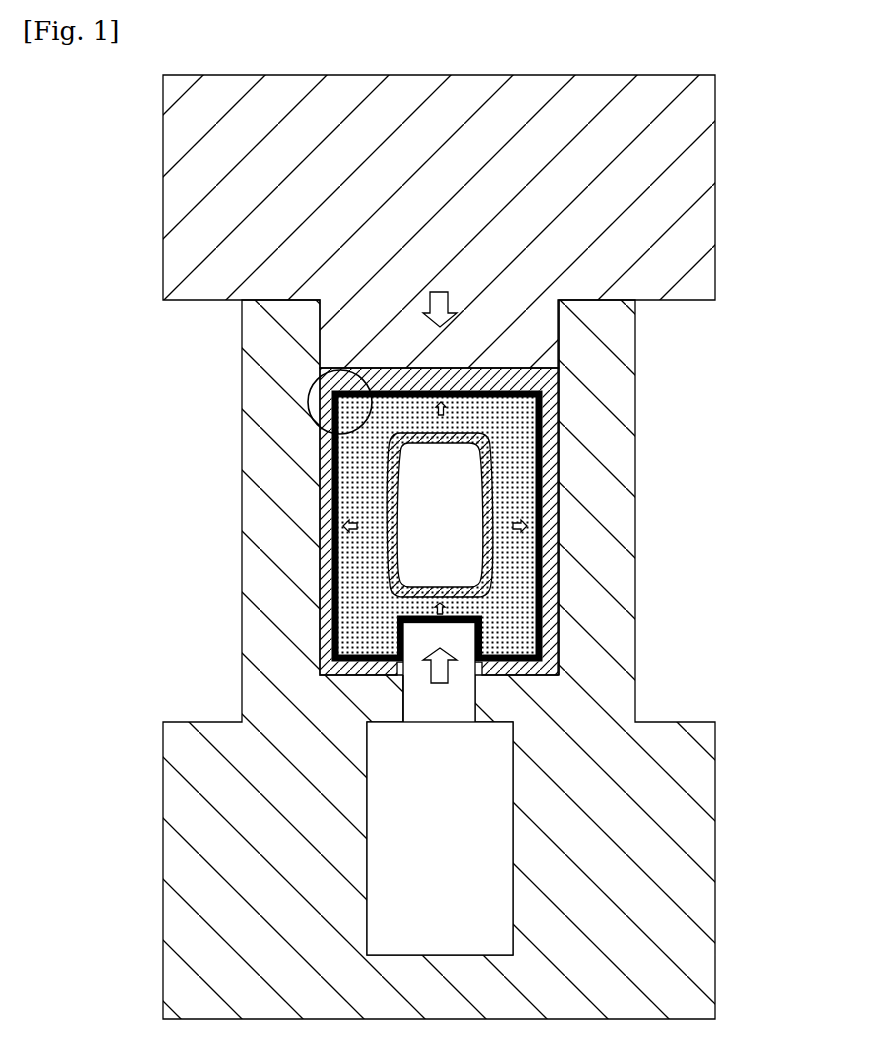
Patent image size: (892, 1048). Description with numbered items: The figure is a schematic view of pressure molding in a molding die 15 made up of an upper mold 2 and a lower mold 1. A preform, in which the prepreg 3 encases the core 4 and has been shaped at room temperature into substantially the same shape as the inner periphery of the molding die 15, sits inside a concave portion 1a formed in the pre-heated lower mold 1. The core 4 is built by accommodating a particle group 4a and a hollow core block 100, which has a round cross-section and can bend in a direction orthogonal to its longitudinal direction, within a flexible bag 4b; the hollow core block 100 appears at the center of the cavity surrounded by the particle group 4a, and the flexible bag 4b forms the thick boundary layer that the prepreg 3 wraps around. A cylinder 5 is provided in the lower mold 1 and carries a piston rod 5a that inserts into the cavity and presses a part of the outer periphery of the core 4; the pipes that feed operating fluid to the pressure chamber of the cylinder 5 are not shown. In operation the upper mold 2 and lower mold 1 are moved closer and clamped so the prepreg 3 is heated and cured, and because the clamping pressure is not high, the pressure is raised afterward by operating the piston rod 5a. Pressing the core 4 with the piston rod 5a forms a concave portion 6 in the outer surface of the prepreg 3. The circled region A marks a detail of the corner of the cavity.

The lower mold 1 is at (439, 659).
The concave portion 1a is at (560, 555).
The upper mold 2 is at (439, 221).
The prepreg 3 is at (547, 393).
The core 4 is at (306, 530).
The particle group 4a is at (372, 620).
The flexible bag 4b is at (332, 586).
The cylinder 5 is at (470, 778).
The piston rod 5a is at (450, 658).
The concave portion 6 is at (405, 677).
The molding die 15 is at (108, 150).
The hollow core block 100 is at (483, 462).
The region A is at (309, 403).